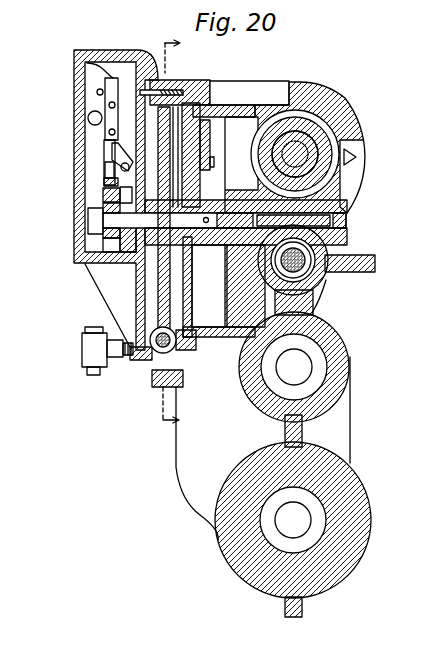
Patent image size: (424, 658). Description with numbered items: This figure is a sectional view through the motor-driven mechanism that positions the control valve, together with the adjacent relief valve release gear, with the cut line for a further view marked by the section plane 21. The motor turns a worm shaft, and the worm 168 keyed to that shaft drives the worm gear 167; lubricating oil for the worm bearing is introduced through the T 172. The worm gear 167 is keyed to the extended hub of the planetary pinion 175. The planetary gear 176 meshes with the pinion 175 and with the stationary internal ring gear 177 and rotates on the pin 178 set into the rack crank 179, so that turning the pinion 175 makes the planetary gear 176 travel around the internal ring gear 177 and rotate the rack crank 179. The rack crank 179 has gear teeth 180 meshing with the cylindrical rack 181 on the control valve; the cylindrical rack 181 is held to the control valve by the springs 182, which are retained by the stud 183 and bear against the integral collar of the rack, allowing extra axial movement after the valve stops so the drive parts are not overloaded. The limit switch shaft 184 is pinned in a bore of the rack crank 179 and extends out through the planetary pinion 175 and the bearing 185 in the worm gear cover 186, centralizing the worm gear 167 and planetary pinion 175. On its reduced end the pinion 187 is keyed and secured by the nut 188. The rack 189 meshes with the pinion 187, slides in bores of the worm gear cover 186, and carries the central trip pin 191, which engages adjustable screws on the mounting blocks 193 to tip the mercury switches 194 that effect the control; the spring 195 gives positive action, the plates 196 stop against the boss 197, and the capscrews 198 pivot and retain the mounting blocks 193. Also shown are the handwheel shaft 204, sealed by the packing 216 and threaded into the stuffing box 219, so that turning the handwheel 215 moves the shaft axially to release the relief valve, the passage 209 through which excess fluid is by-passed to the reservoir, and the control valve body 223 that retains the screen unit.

The section plane 21 is at (157, 233).
The worm gear 167 is at (160, 315).
The worm 168 is at (147, 357).
The T 172 is at (90, 355).
The planetary pinion 175 is at (160, 262).
The planetary gear 176 is at (198, 92).
The stationary internal ring gear 177 is at (183, 325).
The pin 178 is at (212, 81).
The rack crank 179 is at (230, 128).
The gear teeth 180 is at (352, 208).
The cylindrical rack 181 is at (345, 242).
The springs 182 is at (322, 293).
The stud 183 is at (312, 267).
The limit switch shaft 184 is at (92, 274).
The bearing 185 is at (107, 243).
The worm gear cover 186 is at (121, 50).
The pinion 187 is at (97, 210).
The nut 188 is at (100, 235).
The rack 189 is at (100, 194).
The central trip pin 191 is at (110, 148).
The mounting blocks 193 is at (77, 58).
The mercury switches 194 is at (88, 117).
The spring 195 is at (110, 167).
The plates 196 is at (115, 155).
The boss 197 is at (110, 180).
The capscrews 198 is at (97, 88).
The handwheel shaft 204 is at (309, 153).
The passage 209 is at (308, 529).
The handwheel 215 is at (330, 84).
The packing 216 is at (320, 126).
The stuffing box 219 is at (318, 115).
The control valve body 223 is at (190, 482).